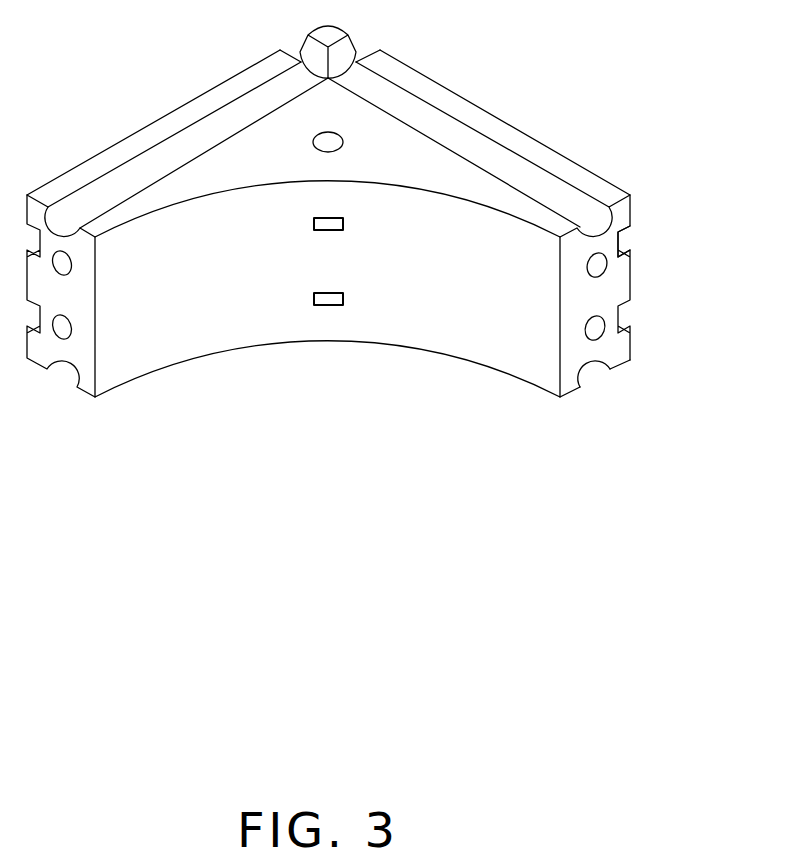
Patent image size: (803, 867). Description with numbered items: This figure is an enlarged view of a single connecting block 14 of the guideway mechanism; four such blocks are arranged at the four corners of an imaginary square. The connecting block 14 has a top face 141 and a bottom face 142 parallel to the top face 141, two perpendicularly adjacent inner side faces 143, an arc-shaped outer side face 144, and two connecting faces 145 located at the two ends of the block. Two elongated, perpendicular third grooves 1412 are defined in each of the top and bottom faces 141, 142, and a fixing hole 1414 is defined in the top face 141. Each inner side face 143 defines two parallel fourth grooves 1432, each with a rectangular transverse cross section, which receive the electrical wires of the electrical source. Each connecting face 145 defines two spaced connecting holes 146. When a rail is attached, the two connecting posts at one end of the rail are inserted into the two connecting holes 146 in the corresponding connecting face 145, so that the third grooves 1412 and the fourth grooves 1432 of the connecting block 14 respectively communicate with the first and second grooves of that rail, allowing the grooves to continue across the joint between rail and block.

The connecting block 14 is at (389, 248).
The top face 141 is at (552, 160).
The bottom face 142 is at (625, 363).
The inner side face 143 is at (632, 210).
The arc-shaped outer side face 144 is at (480, 330).
The connecting face 145 is at (567, 382).
The connecting hole 146 is at (602, 267).
The third groove 1412 is at (203, 135).
The fixing hole 1414 is at (328, 142).
The fourth groove 1432 is at (627, 242).